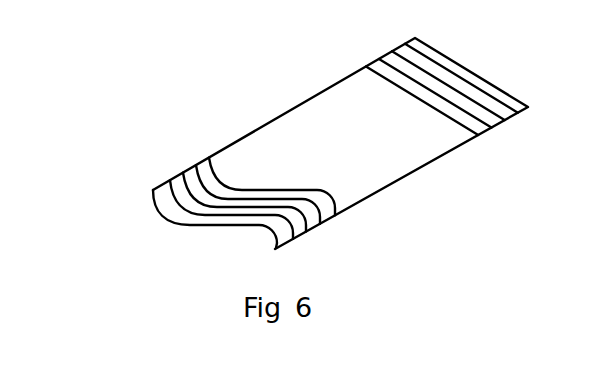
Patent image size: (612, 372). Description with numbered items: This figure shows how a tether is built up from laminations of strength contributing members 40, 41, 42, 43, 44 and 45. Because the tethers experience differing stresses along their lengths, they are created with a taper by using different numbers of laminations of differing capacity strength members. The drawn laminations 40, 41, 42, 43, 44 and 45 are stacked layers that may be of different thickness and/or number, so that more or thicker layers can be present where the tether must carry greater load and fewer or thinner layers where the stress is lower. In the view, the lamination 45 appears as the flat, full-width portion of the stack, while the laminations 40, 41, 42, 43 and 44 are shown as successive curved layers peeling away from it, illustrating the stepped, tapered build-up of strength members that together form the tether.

The lamination of strength contributing member 40 is at (186, 144).
The lamination of strength contributing member 41 is at (157, 190).
The lamination of strength contributing member 42 is at (182, 176).
The lamination of strength contributing member 43 is at (195, 165).
The lamination of strength contributing member 44 is at (208, 157).
The lamination of strength contributing member 45 is at (265, 150).